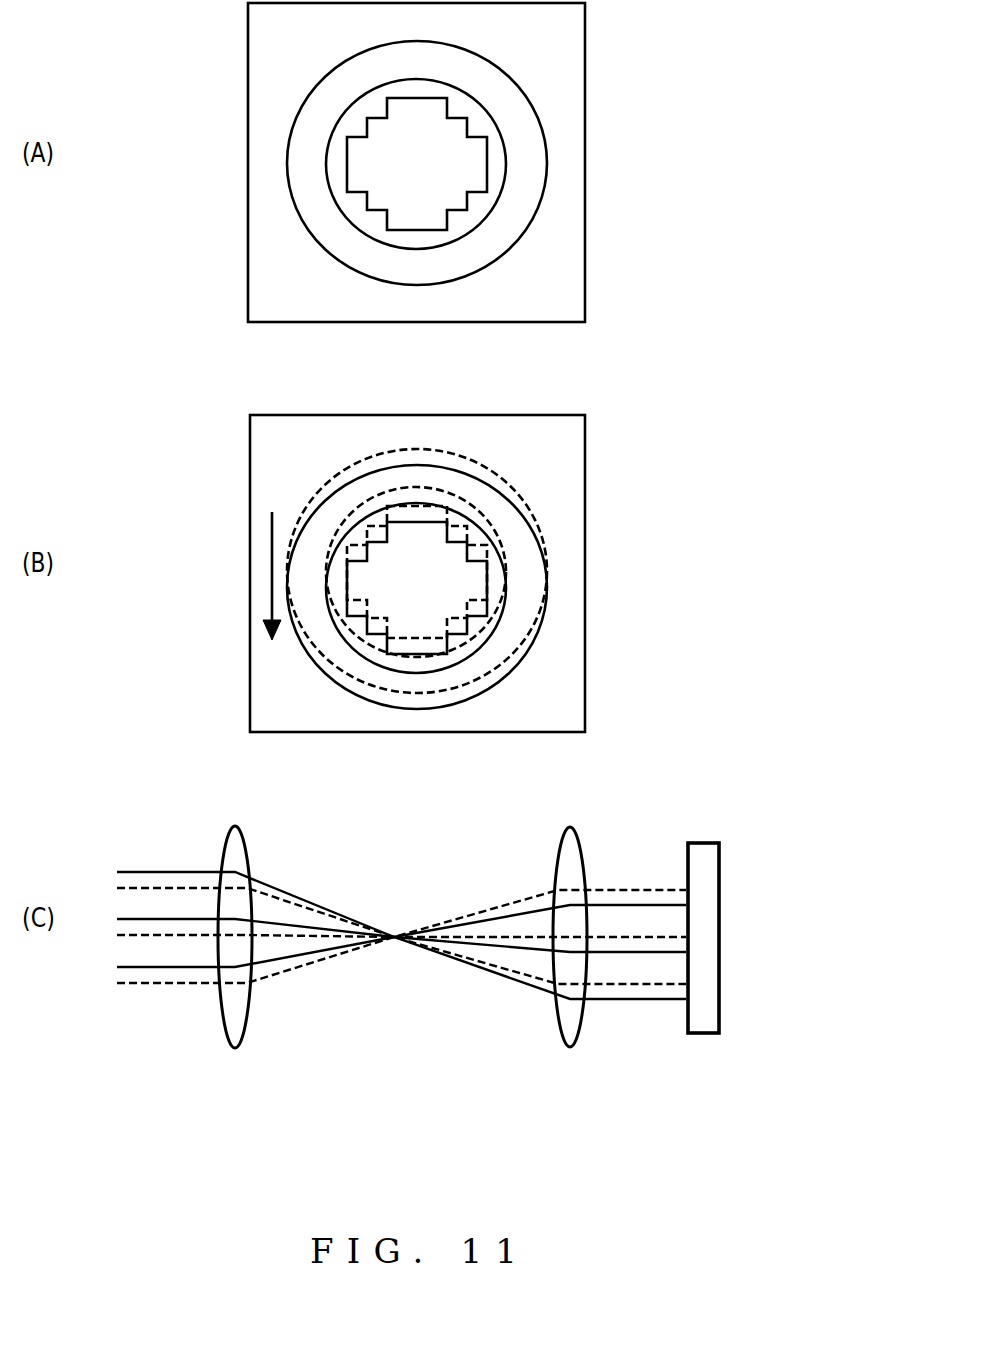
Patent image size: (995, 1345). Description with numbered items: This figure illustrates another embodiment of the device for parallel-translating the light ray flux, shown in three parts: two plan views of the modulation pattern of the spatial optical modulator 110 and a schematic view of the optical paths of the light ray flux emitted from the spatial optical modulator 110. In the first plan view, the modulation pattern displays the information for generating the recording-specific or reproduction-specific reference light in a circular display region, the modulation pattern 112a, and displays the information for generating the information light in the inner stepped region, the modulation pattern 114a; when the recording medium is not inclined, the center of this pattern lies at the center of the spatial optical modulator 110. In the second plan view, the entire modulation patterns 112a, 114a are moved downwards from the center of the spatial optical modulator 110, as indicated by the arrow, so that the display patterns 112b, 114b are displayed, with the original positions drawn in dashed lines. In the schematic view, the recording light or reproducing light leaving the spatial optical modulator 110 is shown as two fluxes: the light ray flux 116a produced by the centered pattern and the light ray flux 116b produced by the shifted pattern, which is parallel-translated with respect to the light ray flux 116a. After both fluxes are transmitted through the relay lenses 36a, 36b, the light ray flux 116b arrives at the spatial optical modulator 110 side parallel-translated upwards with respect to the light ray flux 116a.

The spatial optical modulator 110 is at (585, 255).
The modulation pattern 112a is at (525, 132).
The modulation pattern 114a is at (440, 132).
The display pattern 112b is at (530, 645).
The display pattern 114b is at (432, 652).
The relay lens 36a is at (563, 853).
The relay lens 36b is at (245, 857).
The light ray flux 116a is at (617, 888).
The light ray flux 116b is at (617, 1001).